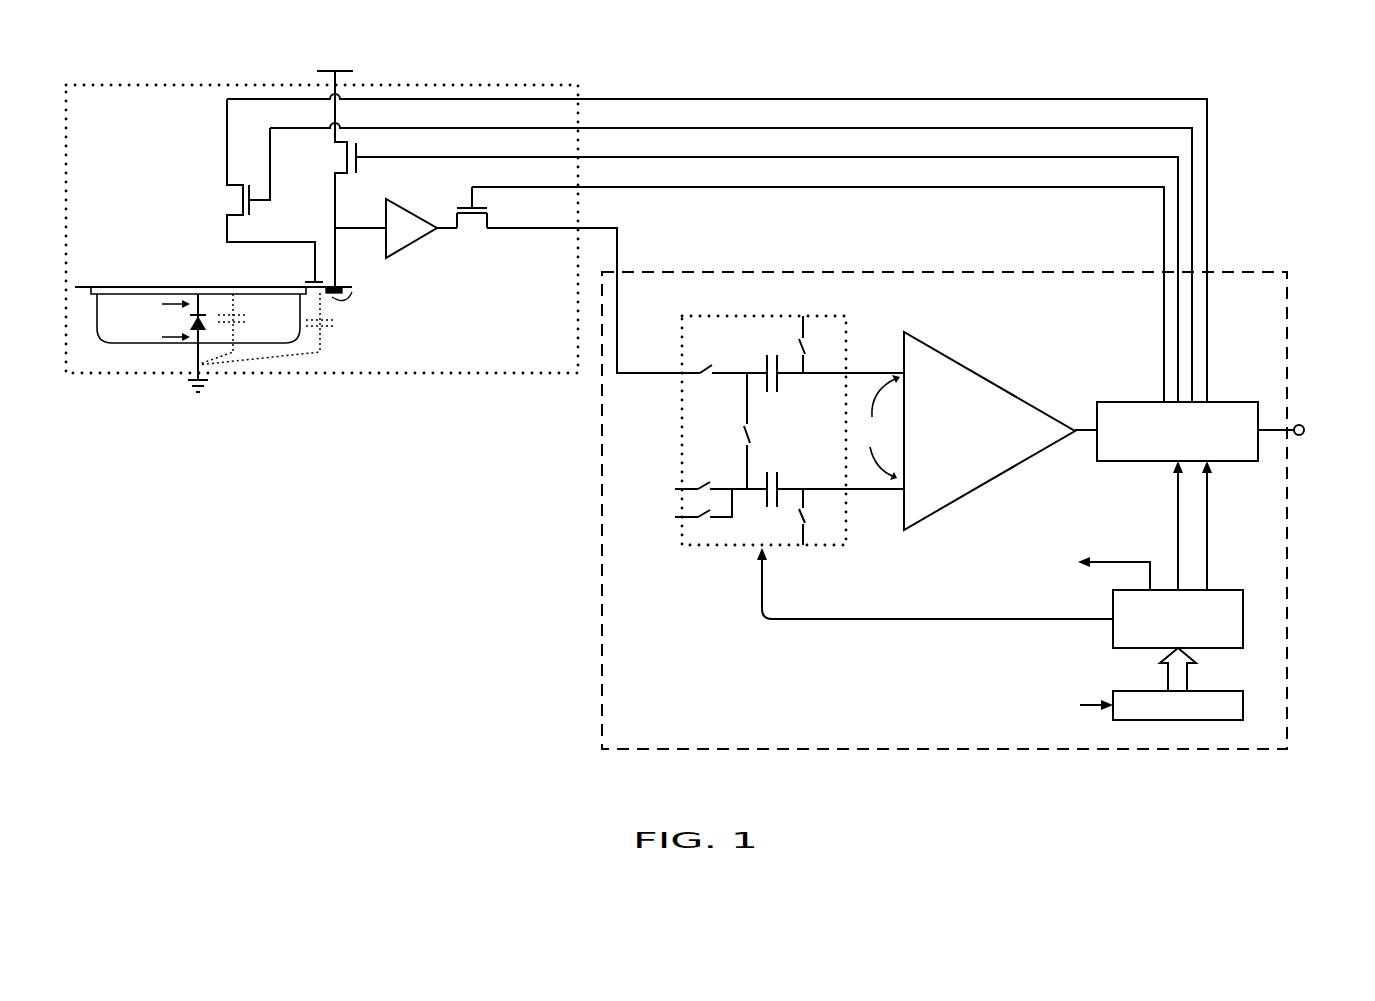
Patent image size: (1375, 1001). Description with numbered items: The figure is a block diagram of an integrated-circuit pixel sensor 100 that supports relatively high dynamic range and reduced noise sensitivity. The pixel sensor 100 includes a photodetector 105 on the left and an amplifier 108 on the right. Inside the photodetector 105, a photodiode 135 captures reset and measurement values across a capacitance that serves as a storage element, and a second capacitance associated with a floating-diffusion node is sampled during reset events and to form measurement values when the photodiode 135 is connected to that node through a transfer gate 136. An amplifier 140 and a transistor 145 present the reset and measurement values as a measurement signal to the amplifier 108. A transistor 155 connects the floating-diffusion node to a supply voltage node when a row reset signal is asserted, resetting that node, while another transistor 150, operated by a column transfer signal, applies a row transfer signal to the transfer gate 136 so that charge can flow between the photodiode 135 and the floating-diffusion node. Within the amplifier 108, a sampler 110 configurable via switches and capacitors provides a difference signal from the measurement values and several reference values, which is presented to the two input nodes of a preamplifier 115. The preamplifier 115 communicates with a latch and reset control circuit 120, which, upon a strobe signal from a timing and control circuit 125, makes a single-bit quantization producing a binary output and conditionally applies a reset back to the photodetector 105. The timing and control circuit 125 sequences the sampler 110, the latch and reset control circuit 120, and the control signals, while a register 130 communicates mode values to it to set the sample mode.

The pixel sensor 100 is at (620, 72).
The photodetector 105 is at (636, 224).
The amplifier 108 is at (980, 510).
The sampler 110 is at (708, 572).
The preamplifier 115 is at (1000, 431).
The latch and reset control circuit 120 is at (1222, 402).
The timing and control circuit 125 is at (1233, 590).
The register 130 is at (1075, 684).
The photodiode 135 is at (213, 286).
The transfer gate 136 is at (313, 289).
The amplifier 140 is at (385, 255).
The transistor 145 is at (465, 217).
The transistor 150 is at (240, 200).
The transistor 155 is at (343, 154).